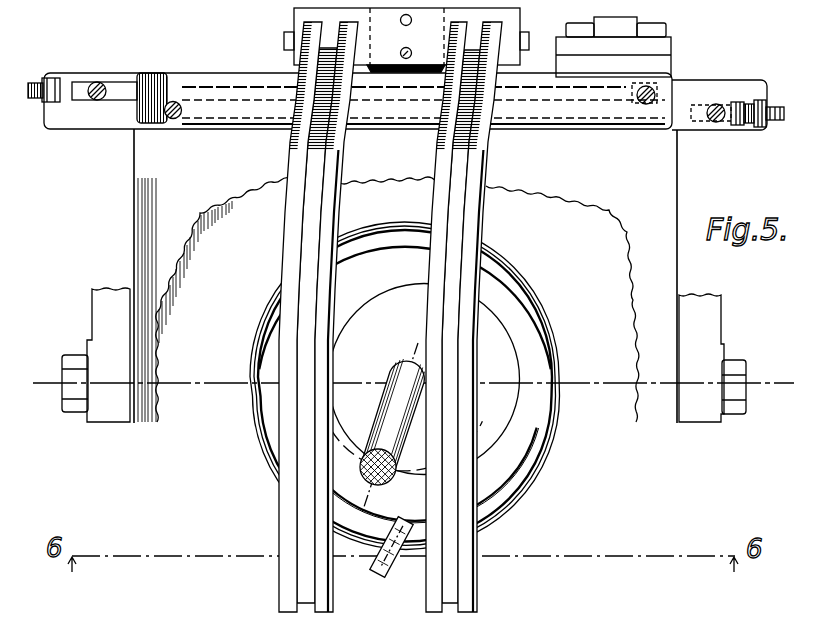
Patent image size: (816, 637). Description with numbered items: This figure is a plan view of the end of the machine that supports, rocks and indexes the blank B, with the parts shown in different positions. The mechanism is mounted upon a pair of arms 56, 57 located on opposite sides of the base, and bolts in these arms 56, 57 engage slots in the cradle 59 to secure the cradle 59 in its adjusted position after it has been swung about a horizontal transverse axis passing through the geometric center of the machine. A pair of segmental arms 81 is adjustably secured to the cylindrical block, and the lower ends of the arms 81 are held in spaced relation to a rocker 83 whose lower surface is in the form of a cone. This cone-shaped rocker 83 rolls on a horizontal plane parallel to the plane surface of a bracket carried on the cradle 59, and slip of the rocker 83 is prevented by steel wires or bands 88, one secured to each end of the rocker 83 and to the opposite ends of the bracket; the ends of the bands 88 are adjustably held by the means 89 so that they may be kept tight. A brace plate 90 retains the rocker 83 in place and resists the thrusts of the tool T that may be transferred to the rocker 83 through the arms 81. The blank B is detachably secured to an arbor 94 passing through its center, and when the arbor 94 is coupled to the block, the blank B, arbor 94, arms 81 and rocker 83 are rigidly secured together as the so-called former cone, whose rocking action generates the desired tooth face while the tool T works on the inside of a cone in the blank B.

The arm 56 is at (702, 354).
The arm 57 is at (105, 327).
The cradle 59 is at (152, 153).
The segmental arms 81 is at (449, 145).
The rocker 83 is at (165, 77).
The steel wires or bands 88 is at (128, 93).
The adjusting means 89 is at (68, 88).
The brace plate 90 is at (652, 70).
The arbor 94 is at (382, 419).
The blank B is at (518, 340).
The tool T is at (386, 566).